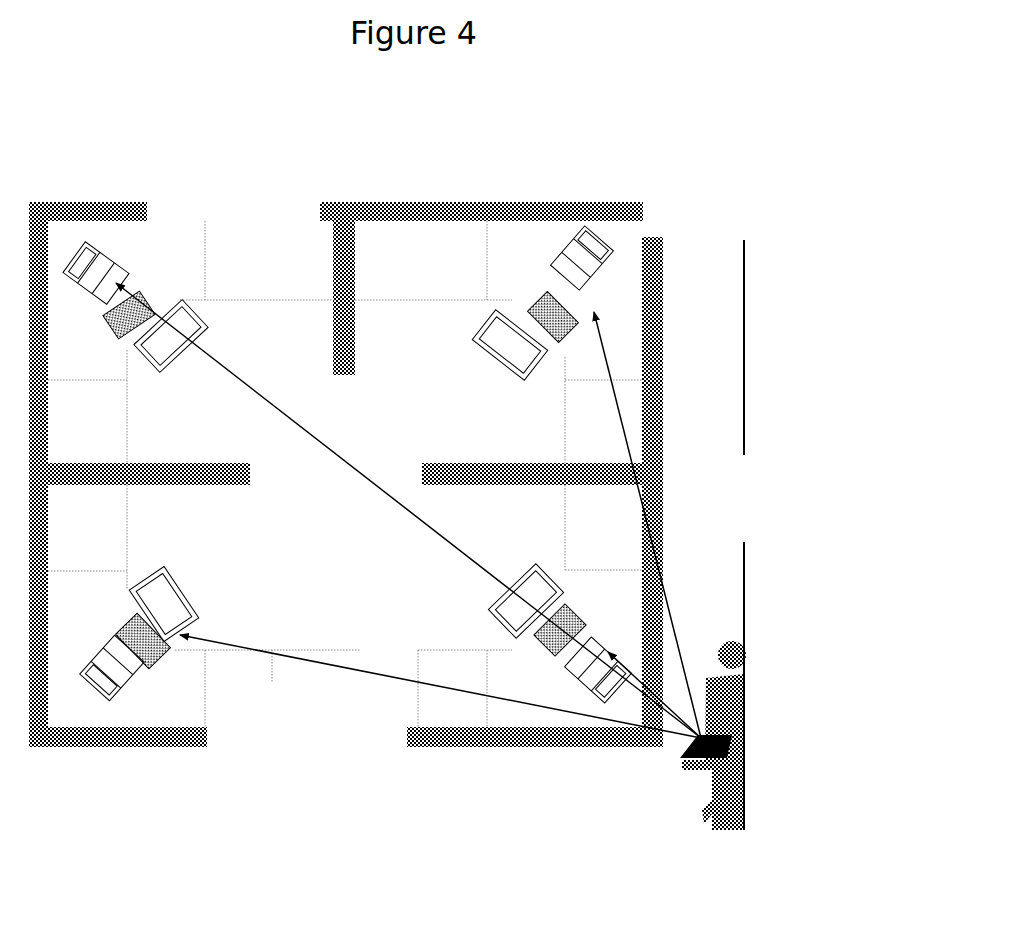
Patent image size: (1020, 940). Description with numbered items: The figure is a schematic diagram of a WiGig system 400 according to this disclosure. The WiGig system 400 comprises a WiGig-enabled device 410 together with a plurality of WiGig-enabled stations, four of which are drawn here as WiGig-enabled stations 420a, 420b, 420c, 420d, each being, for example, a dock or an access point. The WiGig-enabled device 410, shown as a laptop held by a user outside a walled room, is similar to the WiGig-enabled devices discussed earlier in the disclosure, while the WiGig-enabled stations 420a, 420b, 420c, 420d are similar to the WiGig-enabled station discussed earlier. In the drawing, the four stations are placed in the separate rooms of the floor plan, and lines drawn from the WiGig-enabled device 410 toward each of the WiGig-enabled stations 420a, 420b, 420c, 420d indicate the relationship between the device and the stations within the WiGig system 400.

The WiGig system 400 is at (712, 87).
The WiGig-enabled device 410 is at (590, 762).
The WiGig-enabled station 420a is at (675, 582).
The WiGig-enabled station 420b is at (645, 270).
The WiGig-enabled station 420c is at (190, 266).
The WiGig-enabled station 420d is at (229, 665).